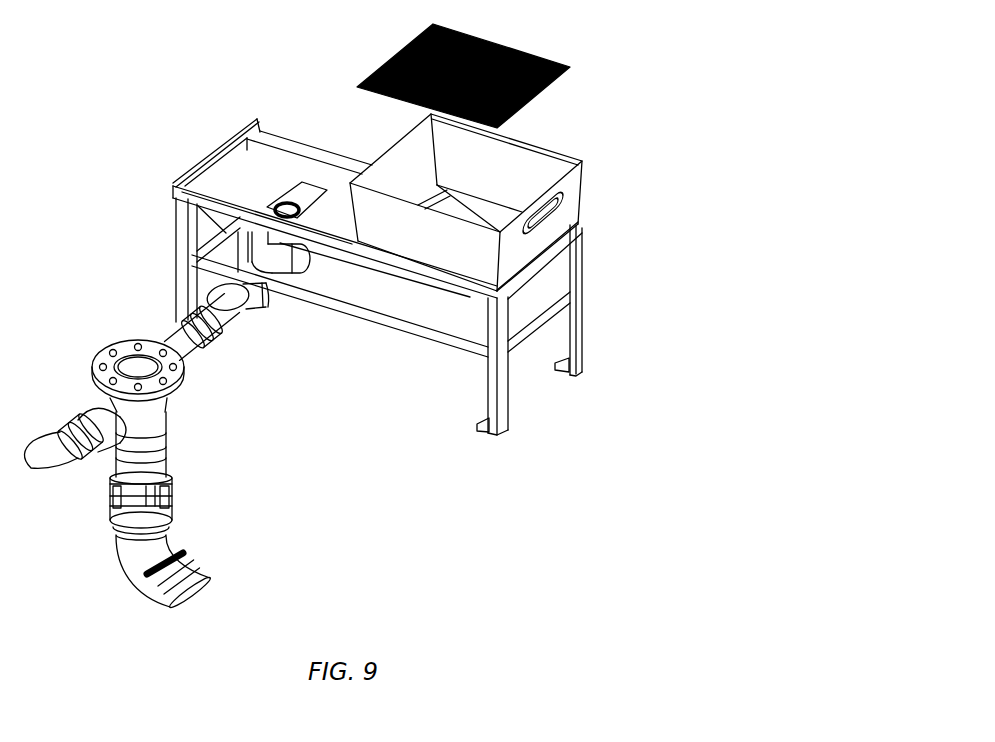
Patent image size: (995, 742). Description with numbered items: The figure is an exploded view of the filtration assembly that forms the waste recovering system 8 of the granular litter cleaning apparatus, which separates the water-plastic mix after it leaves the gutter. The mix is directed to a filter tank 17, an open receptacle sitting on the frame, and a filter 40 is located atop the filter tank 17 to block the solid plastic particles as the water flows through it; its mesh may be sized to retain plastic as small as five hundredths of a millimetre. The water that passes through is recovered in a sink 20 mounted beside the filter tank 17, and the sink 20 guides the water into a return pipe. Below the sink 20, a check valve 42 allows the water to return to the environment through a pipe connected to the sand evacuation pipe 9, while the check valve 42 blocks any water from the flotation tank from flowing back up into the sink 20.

The waste recovering system 8 is at (267, 93).
The sink 20 is at (223, 180).
The filter 40 is at (527, 103).
The filter tank 17 is at (440, 243).
The check valve 42 is at (222, 301).
The sand evacuation pipe 9 is at (210, 578).